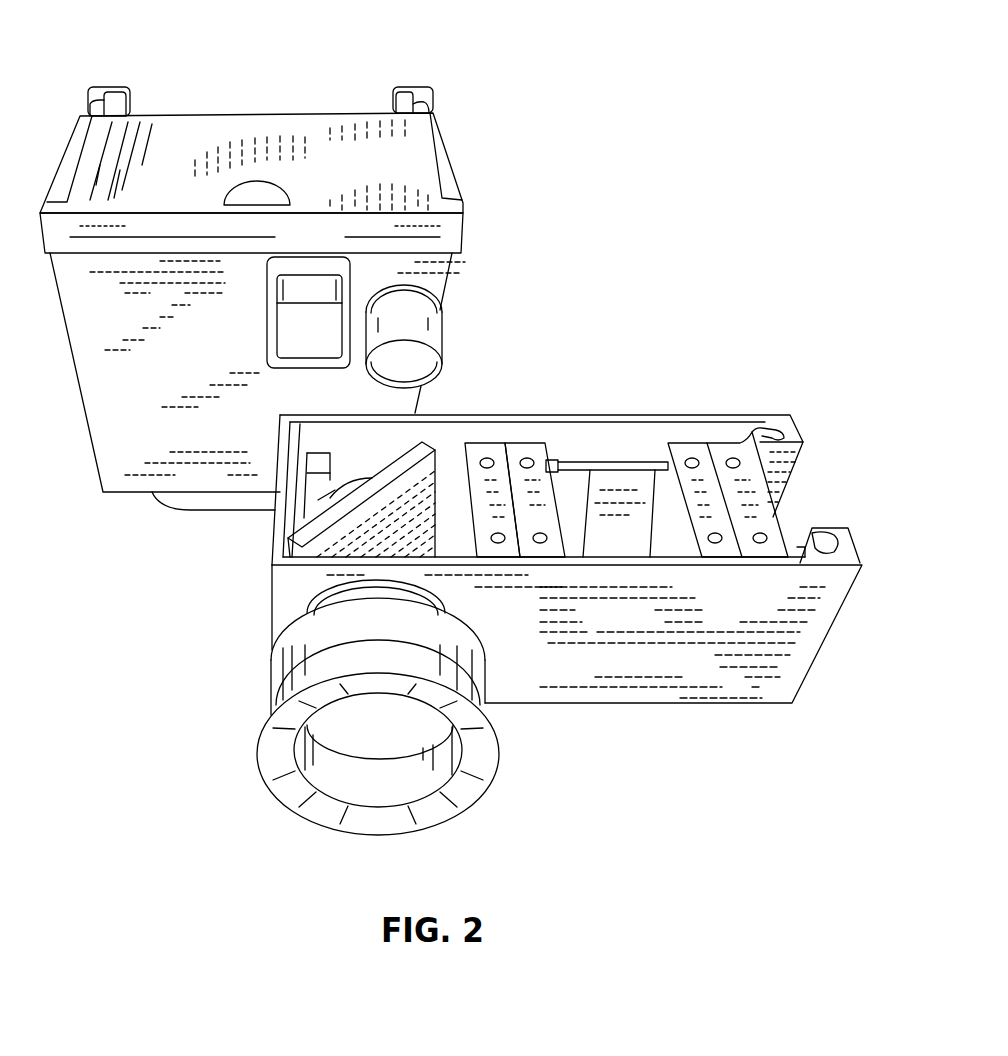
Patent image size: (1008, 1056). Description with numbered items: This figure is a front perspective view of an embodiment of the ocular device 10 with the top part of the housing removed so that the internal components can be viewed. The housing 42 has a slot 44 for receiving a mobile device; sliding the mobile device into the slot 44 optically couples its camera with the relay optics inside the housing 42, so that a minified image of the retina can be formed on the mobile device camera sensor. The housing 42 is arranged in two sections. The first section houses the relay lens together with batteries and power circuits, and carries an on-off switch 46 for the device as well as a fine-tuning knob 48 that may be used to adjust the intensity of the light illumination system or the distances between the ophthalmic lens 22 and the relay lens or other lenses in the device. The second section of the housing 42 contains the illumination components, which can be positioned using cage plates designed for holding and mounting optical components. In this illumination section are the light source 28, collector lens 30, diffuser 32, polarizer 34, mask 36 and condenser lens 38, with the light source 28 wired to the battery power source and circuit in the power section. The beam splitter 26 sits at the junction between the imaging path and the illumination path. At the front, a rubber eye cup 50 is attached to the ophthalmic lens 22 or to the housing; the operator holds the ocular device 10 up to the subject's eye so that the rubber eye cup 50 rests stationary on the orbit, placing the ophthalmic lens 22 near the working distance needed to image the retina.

The ocular device 10 is at (747, 64).
The ophthalmic lens 22 is at (270, 682).
The beam splitter 26 is at (292, 543).
The light source 28 is at (735, 425).
The collector lens 30 is at (683, 443).
The diffuser 32 is at (575, 453).
The polarizer 34 is at (553, 458).
The mask 36 is at (524, 443).
The condenser lens 38 is at (478, 443).
The housing 42 is at (438, 130).
The slot 44 is at (238, 83).
The on-off switch 46 is at (310, 257).
The fine-tuning knob 48 is at (427, 309).
The rubber eye cup 50 is at (480, 793).